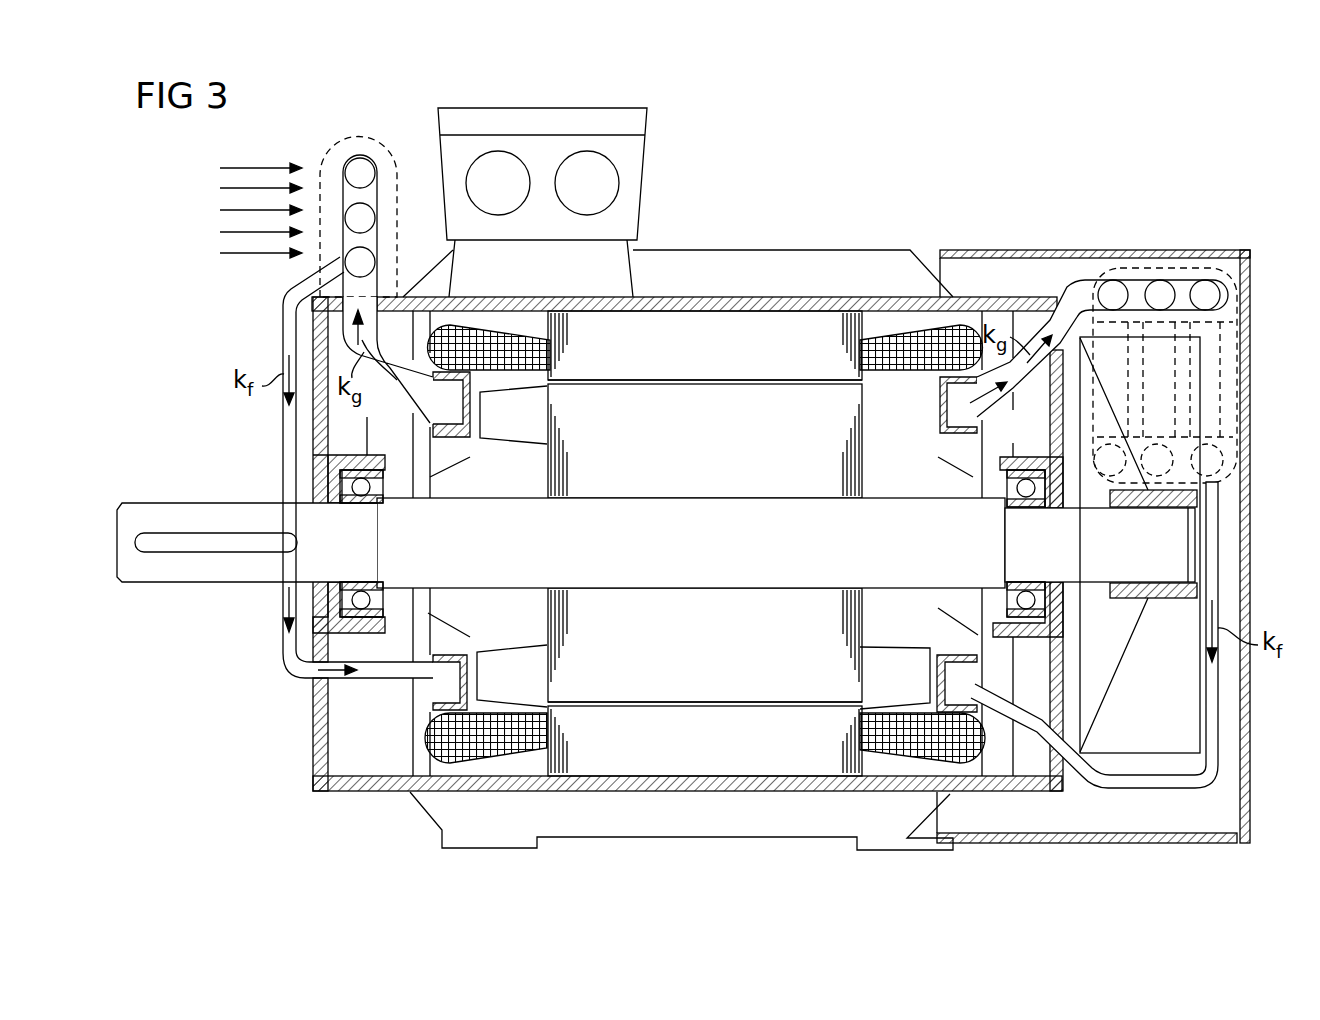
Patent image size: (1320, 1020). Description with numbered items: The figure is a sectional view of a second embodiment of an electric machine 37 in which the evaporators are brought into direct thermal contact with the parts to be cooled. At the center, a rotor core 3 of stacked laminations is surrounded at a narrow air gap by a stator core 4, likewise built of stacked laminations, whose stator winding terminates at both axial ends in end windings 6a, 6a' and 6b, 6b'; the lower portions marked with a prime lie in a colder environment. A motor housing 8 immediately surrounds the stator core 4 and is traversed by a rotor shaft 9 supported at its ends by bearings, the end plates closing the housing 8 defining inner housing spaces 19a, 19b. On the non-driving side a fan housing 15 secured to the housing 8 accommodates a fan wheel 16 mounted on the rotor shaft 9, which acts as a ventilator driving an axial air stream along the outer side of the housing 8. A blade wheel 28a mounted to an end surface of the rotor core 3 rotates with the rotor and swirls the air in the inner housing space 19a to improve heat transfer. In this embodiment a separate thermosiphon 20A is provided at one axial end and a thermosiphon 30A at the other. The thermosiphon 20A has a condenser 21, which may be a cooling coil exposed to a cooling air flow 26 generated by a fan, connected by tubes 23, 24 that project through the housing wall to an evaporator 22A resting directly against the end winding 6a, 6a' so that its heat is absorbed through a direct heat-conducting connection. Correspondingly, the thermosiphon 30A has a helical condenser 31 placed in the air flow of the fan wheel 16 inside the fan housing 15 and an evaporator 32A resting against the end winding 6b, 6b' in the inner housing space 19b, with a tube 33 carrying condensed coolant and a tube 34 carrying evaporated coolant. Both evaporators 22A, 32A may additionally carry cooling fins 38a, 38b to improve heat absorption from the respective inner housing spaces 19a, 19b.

The rotor core 3 is at (757, 368).
The stator core 4 is at (757, 488).
The end winding 6a is at (489, 313).
The end winding 6b is at (921, 315).
The end winding 6a' is at (486, 774).
The end winding 6b' is at (922, 774).
The motor housing 8 is at (720, 308).
The rotor shaft 9 is at (693, 580).
The fan housing 15 is at (1107, 250).
The fan wheel 16 is at (1128, 670).
The inner housing space 19a is at (398, 487).
The inner housing space 19b is at (912, 488).
The thermosiphon 20A is at (411, 441).
The condenser 21 is at (368, 196).
The evaporator 22A is at (452, 690).
The tube 23 is at (290, 452).
The tube 24 is at (388, 333).
The cooling air flow 26 is at (222, 218).
The blade wheel 28a is at (515, 423).
The thermosiphon 30A is at (989, 410).
The helical condenser 31 is at (1182, 287).
The evaporator 32A is at (953, 413).
The tube 33 is at (1140, 782).
The tube 34 is at (1067, 303).
The electric machine 37 is at (838, 172).
The cooling fins 38a is at (460, 642).
The cooling fins 38b is at (945, 643).